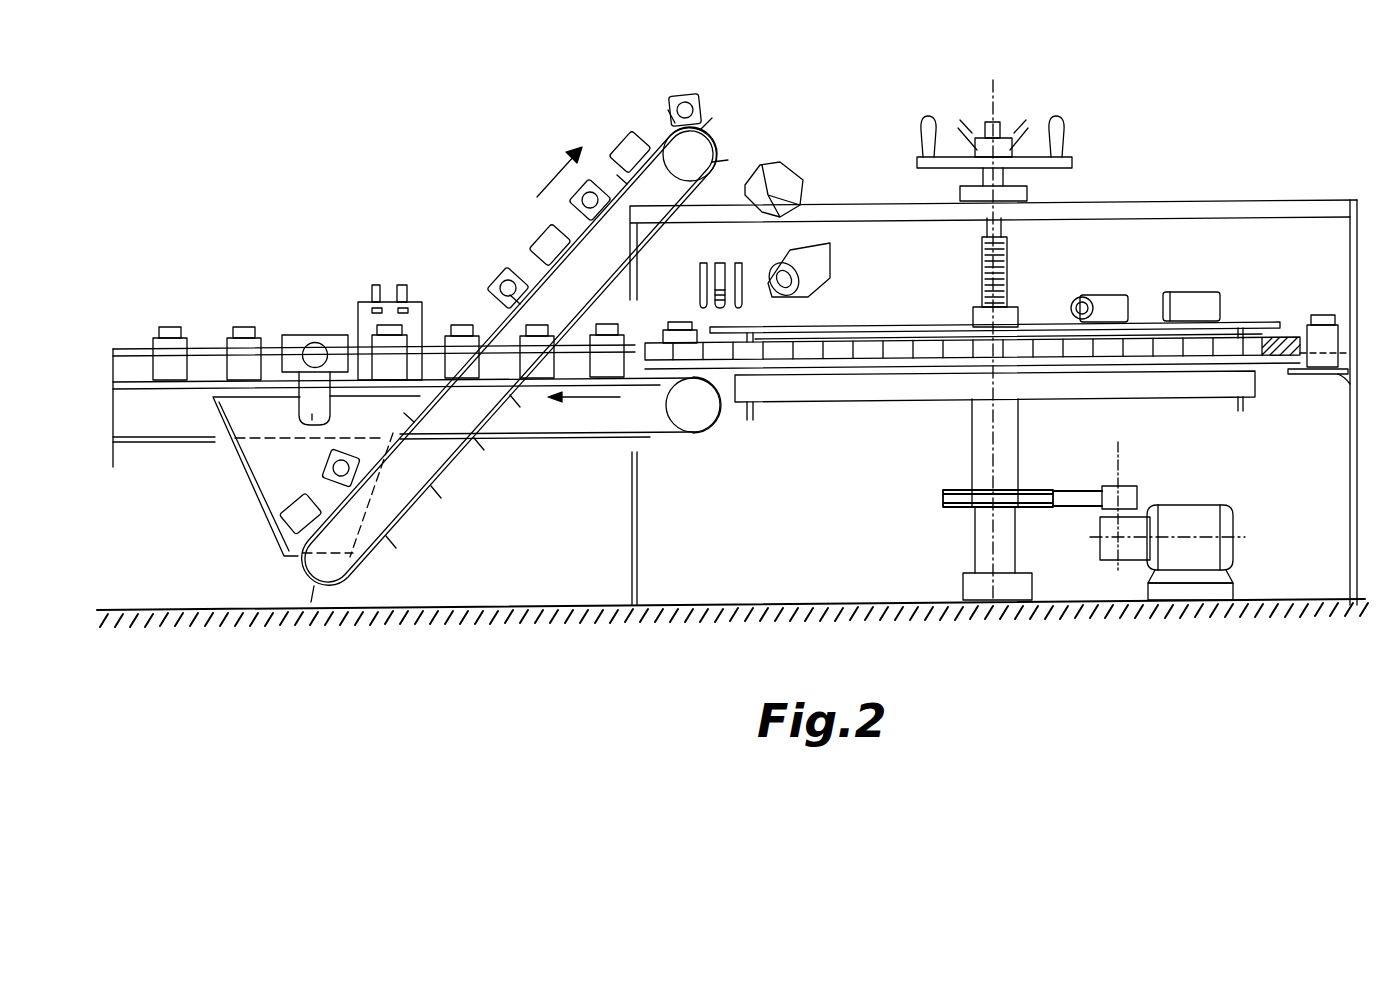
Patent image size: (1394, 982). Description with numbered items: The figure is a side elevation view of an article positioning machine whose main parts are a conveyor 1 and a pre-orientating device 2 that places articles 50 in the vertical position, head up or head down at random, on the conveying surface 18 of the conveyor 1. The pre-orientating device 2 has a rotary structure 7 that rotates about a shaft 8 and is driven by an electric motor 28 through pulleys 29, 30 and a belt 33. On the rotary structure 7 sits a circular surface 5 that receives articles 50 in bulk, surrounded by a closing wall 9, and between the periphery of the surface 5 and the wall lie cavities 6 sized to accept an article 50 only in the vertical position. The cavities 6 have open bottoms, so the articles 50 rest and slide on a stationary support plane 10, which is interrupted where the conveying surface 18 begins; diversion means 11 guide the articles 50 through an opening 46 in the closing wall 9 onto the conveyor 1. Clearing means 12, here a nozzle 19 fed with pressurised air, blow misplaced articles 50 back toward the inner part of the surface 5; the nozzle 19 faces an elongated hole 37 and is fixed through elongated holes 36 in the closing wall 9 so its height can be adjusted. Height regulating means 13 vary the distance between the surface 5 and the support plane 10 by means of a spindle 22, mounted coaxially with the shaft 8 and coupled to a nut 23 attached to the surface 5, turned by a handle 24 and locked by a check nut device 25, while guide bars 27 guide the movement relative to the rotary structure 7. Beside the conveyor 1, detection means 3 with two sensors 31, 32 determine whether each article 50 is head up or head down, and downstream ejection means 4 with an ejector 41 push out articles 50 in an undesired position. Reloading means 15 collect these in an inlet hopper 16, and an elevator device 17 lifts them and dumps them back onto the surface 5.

The conveyor 1 is at (189, 314).
The pre-orientating device 2 is at (1009, 350).
The detection means 3 is at (406, 283).
The ejection means 4 is at (310, 335).
The surface 5 is at (1140, 322).
The cavities 6 is at (825, 353).
The rotary structure 7 is at (850, 392).
The shaft 8 is at (975, 446).
The closing wall 9 is at (1355, 302).
The stationary support plane 10 is at (1293, 380).
The diversion means 11 is at (731, 388).
The clearing means 12 is at (768, 246).
The height regulating means 13 is at (1009, 363).
The reloading means 15 is at (430, 520).
The inlet hopper 16 is at (270, 497).
The elevator device 17 is at (538, 263).
The conveying surface 18 is at (203, 377).
The nozzle 19 is at (777, 215).
The spindle 22 is at (983, 280).
The nut 23 is at (1014, 312).
The handle 24 is at (917, 131).
The check nut device 25 is at (1010, 132).
The guide bars 27 is at (1233, 407).
The electric motor 28 is at (1180, 510).
The pulley 29 is at (1112, 486).
The pulley 30 is at (958, 510).
The sensor 31 is at (391, 252).
The sensor 32 is at (372, 292).
The belt 33 is at (1082, 508).
The elongated holes 36 is at (696, 288).
The elongated hole 37 is at (778, 178).
The ejector 41 is at (317, 347).
The opening 46 is at (640, 443).
The articles 50 is at (622, 135).